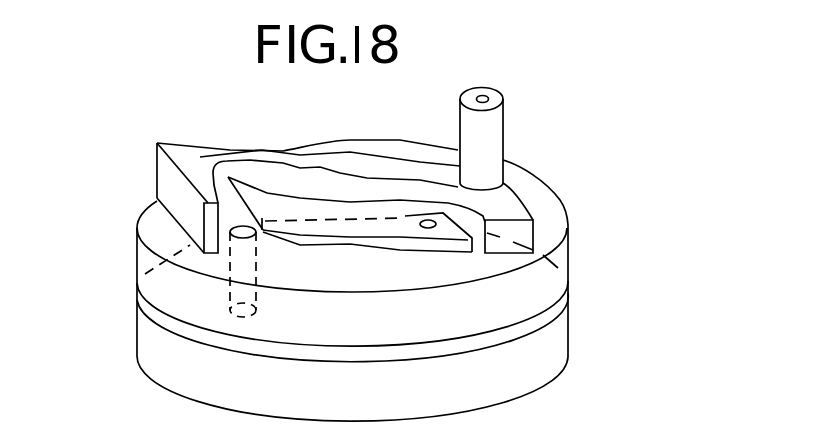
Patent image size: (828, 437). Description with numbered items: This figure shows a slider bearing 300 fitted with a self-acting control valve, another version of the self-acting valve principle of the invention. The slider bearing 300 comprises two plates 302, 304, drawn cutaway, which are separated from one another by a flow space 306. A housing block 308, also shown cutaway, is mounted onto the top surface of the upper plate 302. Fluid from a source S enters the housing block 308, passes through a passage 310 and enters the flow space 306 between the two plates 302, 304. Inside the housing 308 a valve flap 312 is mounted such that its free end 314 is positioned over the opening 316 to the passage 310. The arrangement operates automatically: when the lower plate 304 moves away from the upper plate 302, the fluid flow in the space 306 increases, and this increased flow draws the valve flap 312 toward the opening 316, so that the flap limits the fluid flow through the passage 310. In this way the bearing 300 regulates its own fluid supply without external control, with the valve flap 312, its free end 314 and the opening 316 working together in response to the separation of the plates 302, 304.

The slider bearing 300 is at (665, 204).
The plate 302 is at (562, 252).
The plate 304 is at (556, 361).
The flow space 306 is at (566, 283).
The housing block 308 is at (193, 152).
The passage 310 is at (233, 292).
The valve flap 312 is at (337, 207).
The free end 314 is at (278, 180).
The opening 316 is at (220, 230).
The source S is at (480, 83).